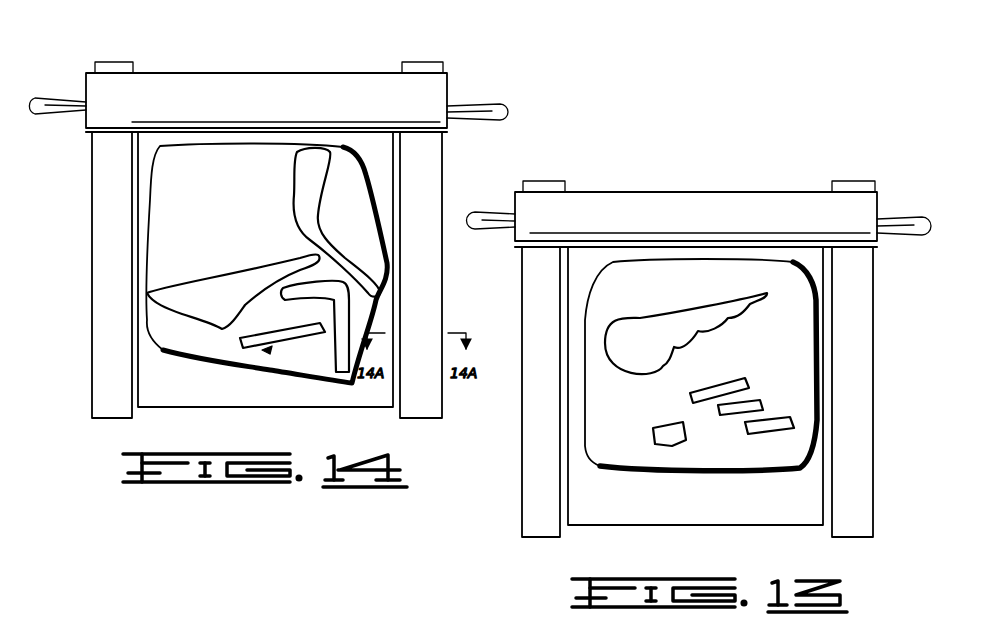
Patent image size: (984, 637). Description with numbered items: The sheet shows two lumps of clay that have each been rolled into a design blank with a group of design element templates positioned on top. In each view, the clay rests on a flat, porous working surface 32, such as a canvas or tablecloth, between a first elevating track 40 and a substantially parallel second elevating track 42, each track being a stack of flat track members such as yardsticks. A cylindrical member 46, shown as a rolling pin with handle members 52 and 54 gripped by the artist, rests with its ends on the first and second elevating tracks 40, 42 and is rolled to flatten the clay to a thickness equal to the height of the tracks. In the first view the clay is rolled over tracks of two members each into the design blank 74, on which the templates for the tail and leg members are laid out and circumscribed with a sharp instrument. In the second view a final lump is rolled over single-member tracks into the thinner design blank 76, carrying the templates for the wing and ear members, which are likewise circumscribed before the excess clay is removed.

In FIG. 15, the working surface 32 is at (700, 512).
In FIG. 14, the first elevating track 40 is at (423, 203).
In FIG. 15, the first elevating track 40 is at (855, 365).
In FIG. 14, the second elevating track 42 is at (110, 258).
In FIG. 15, the second elevating track 42 is at (540, 467).
In FIG. 14, the cylindrical member 46 is at (437, 100).
In FIG. 15, the cylindrical member 46 is at (797, 218).
In FIG. 14, the handle member 52 is at (493, 110).
In FIG. 15, the handle member 52 is at (922, 220).
In FIG. 14, the handle member 54 is at (42, 105).
In FIG. 14, the design blank 74 is at (192, 174).
In FIG. 15, the design blank 76 is at (621, 276).